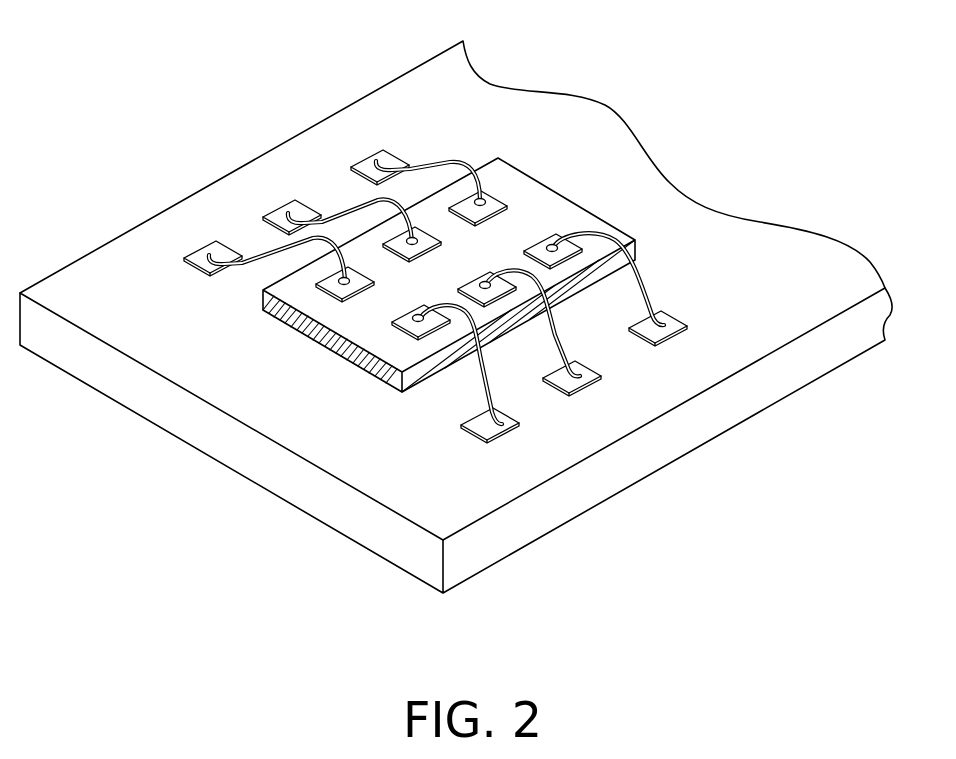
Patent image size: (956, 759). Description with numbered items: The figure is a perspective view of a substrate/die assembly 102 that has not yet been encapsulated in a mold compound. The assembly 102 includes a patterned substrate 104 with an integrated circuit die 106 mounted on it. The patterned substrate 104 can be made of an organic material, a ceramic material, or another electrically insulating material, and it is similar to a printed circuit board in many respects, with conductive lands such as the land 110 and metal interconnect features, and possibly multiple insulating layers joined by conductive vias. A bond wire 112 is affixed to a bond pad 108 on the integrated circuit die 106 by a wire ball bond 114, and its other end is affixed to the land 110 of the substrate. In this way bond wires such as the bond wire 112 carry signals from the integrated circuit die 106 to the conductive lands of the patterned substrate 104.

The substrate/die assembly 102 is at (456, 372).
The patterned substrate 104 is at (118, 382).
The integrated circuit die 106 is at (282, 313).
The bond pad 108 is at (389, 327).
The land 110 is at (467, 430).
The bond wire 112 is at (437, 306).
The wire ball bond 114 is at (414, 315).